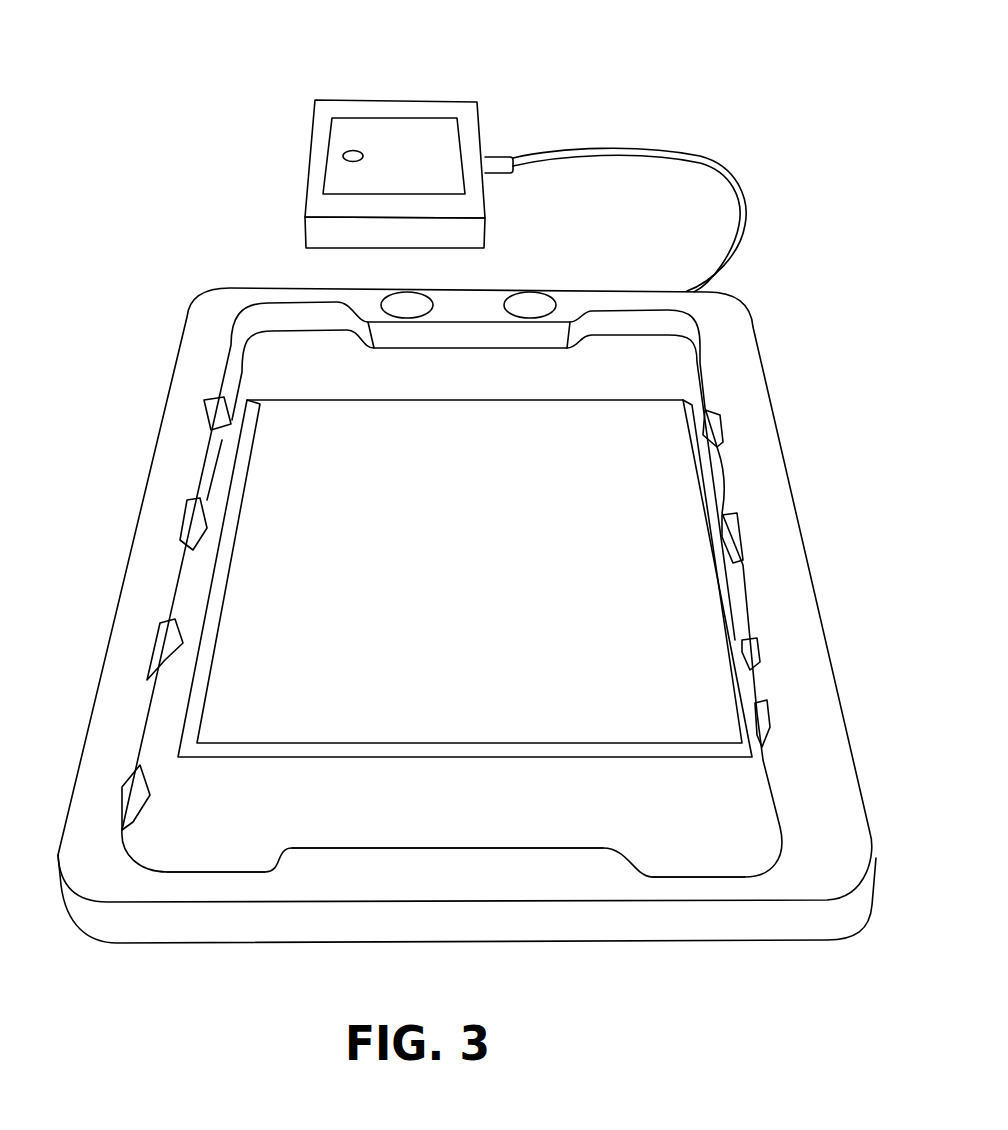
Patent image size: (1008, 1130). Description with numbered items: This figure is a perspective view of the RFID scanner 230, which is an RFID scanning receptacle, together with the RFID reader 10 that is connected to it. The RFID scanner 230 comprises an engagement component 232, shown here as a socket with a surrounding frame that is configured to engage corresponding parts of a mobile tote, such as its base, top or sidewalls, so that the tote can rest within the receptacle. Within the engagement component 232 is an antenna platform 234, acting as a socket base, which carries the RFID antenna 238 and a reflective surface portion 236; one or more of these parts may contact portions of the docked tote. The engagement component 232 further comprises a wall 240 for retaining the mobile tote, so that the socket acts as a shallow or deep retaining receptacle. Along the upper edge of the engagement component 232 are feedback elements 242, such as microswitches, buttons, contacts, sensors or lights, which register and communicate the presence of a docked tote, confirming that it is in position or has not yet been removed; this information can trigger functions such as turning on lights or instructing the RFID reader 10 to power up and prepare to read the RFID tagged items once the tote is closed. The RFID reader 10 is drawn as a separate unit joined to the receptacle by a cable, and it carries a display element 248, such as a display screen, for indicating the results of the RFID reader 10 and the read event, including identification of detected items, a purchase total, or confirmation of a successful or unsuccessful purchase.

The RFID reader 10 is at (402, 78).
The RFID scanner 230 is at (137, 492).
The engagement component 232 is at (163, 407).
The antenna platform 234 is at (285, 362).
The reflective surface portion 236 is at (243, 823).
The RFID antenna 238 is at (465, 573).
The wall 240 is at (177, 596).
The feedback elements 242 is at (530, 293).
The display element 248 is at (378, 142).